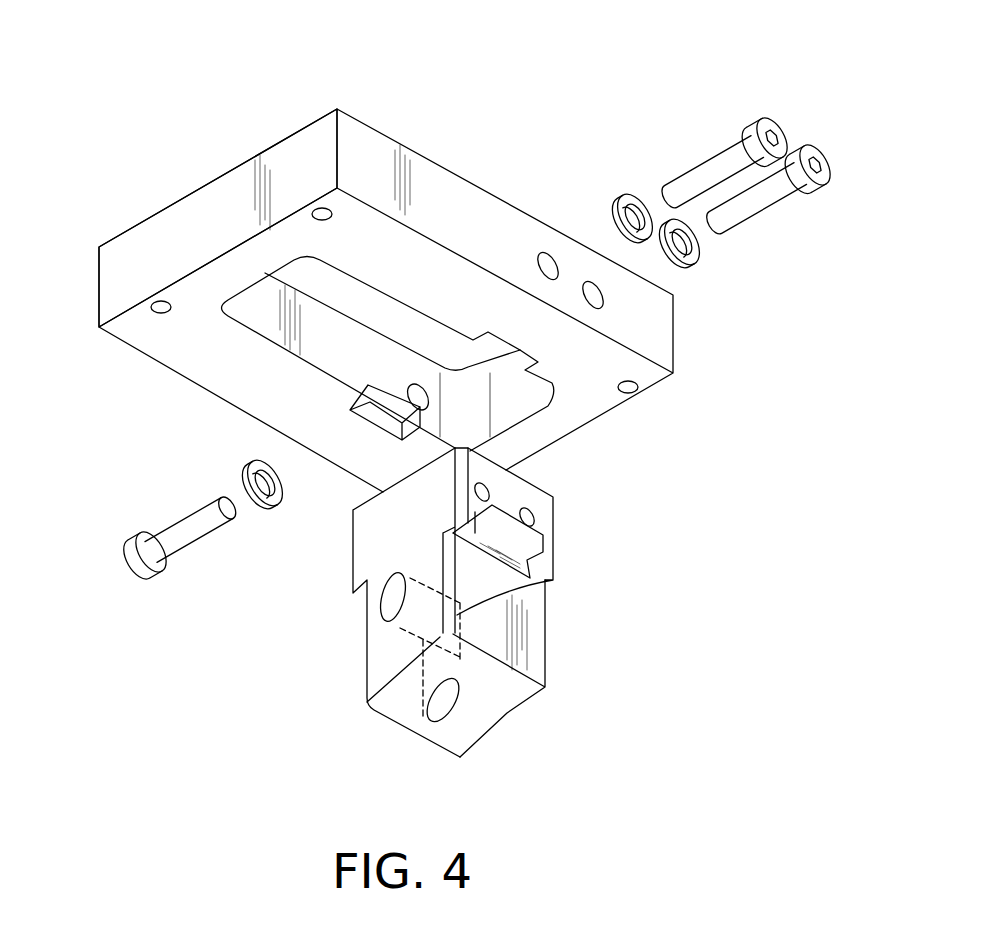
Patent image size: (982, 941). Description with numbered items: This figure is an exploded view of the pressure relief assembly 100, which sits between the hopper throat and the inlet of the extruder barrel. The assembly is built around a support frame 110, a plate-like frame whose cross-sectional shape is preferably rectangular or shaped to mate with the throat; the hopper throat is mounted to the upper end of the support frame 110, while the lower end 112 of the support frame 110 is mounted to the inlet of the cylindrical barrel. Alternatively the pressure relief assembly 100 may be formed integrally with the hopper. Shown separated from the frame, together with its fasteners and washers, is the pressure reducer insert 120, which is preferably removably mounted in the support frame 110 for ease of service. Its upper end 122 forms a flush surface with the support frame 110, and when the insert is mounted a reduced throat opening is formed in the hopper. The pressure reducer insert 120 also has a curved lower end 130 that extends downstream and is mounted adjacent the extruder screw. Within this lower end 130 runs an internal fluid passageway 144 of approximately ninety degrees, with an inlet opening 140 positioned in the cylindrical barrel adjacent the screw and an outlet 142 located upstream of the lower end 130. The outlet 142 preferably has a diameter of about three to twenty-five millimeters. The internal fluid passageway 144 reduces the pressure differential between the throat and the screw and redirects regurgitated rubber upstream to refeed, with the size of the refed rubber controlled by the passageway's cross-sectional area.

The pressure relief assembly 100 is at (170, 139).
The support frame 110 is at (455, 200).
The lower end of the support frame 112 is at (150, 340).
The pressure reducer insert 120 is at (562, 651).
The upper end of the pressure reducer insert 122 is at (548, 505).
The curved lower end of the pressure reducer insert 130 is at (392, 708).
The inlet opening of the internal fluid passageway 140 is at (440, 704).
The outlet of the internal fluid passageway 142 is at (352, 592).
The internal fluid passageway 144 is at (462, 618).